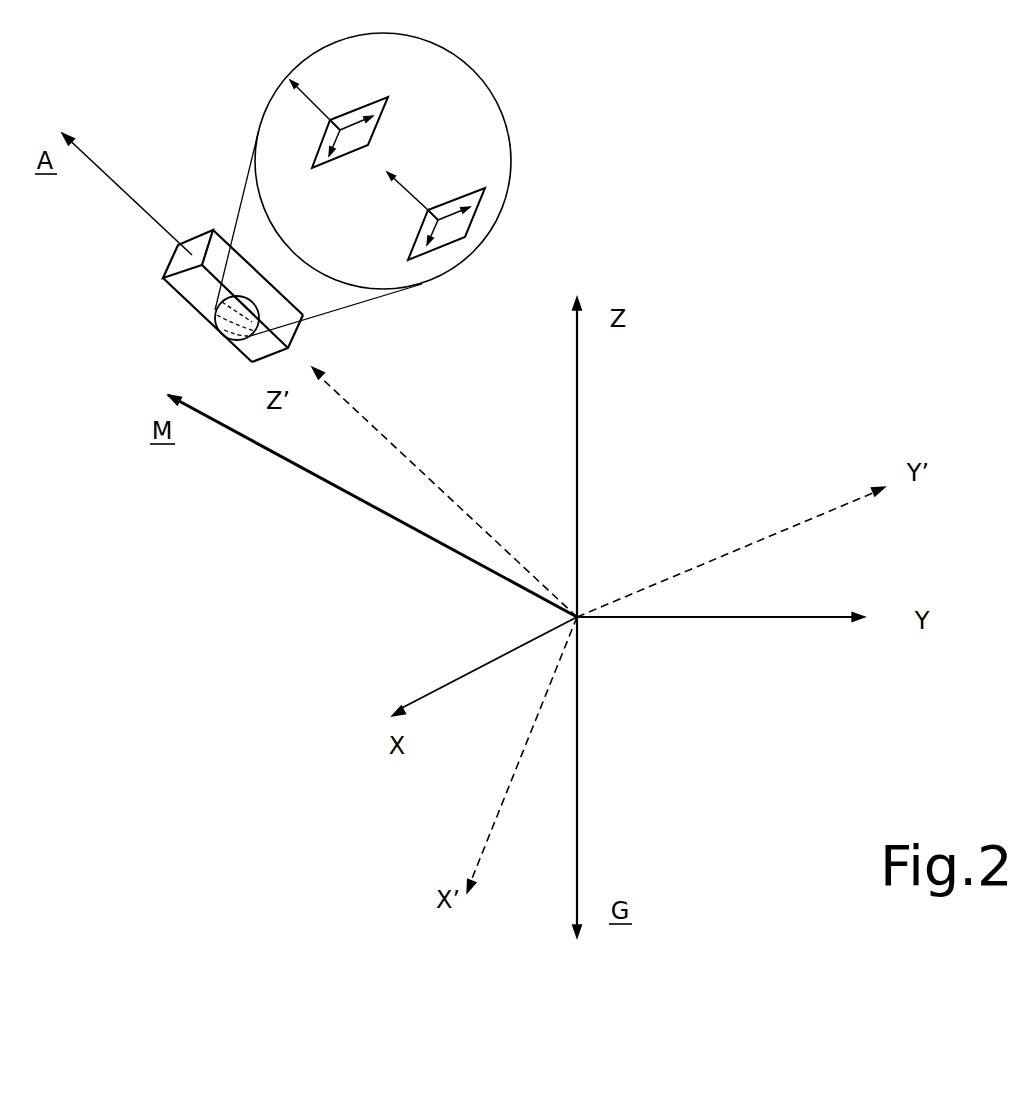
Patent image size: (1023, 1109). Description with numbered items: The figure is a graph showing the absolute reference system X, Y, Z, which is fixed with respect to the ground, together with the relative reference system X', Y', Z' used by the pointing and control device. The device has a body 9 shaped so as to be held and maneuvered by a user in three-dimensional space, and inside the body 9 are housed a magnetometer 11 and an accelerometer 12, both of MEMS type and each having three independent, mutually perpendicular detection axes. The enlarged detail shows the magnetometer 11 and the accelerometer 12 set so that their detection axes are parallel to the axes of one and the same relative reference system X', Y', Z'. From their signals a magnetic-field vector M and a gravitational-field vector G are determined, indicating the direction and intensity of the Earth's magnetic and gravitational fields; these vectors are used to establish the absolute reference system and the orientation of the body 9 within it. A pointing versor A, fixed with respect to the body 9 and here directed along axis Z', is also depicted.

The body 9 is at (178, 297).
The magnetometer 11 is at (463, 195).
The accelerometer 12 is at (350, 157).